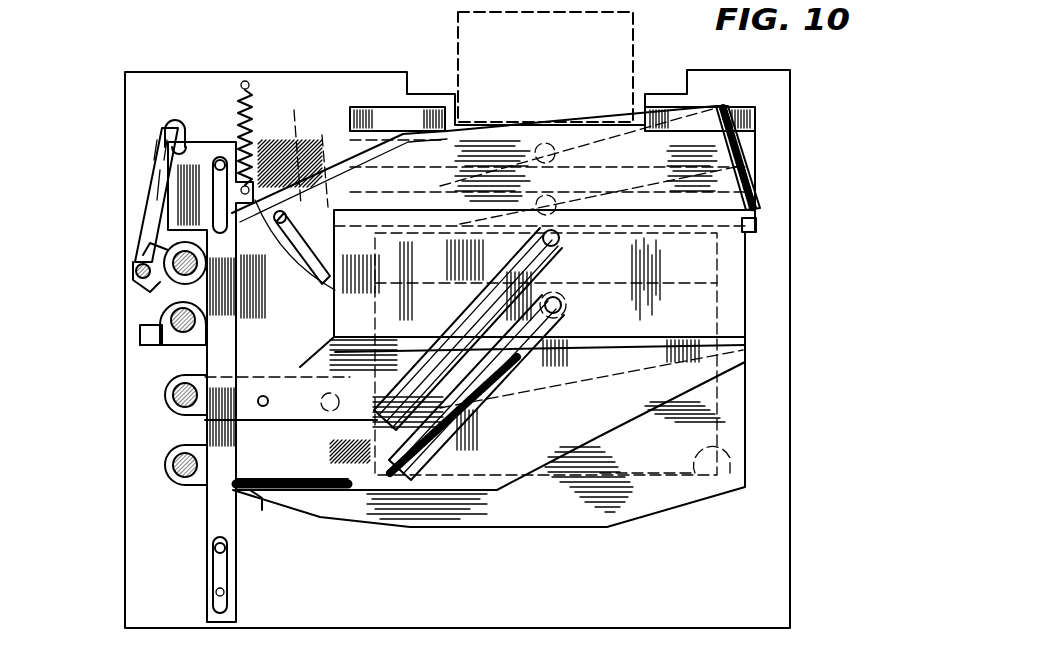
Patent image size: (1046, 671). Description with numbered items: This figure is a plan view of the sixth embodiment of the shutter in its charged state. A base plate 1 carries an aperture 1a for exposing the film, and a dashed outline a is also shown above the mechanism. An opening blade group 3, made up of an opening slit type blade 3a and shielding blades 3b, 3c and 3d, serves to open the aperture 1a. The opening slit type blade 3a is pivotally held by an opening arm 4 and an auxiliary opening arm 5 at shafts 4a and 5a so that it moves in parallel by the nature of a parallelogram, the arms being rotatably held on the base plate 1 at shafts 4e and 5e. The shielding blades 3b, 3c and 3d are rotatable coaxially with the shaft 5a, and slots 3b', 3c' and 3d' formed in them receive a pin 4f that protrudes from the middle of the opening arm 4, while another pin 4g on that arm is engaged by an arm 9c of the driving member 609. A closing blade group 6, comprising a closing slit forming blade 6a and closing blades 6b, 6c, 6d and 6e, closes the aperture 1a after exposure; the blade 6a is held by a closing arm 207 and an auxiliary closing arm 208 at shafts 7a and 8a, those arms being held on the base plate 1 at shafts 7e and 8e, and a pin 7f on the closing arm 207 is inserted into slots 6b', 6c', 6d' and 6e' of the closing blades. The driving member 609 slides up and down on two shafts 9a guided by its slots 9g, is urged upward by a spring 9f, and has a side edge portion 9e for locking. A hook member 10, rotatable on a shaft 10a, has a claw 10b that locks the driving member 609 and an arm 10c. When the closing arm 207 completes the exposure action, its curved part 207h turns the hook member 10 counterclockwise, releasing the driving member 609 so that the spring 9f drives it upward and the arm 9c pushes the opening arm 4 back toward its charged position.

The base plate 1 is at (760, 551).
The aperture 1a is at (745, 478).
The cassette position a is at (612, 28).
The opening blade group 3 is at (843, 287).
The opening slit type blade 3a is at (730, 300).
The shielding blade 3b is at (586, 377).
The shielding blade 3c is at (591, 426).
The shielding blade 3d is at (535, 379).
The slot 3b' is at (292, 529).
The slot 3c' is at (333, 526).
The slot 3d' is at (377, 527).
The opening arm 4 is at (172, 407).
The shaft 4a is at (562, 245).
The shaft 4e is at (177, 447).
The pin 4f is at (322, 393).
The pin 4g is at (263, 395).
The auxiliary opening arm 5 is at (205, 488).
The shaft 5a is at (566, 311).
The shaft 5e is at (173, 468).
The closing blade group 6 is at (843, 70).
The closing slit forming blade 6a is at (740, 115).
The closing blade 6b is at (533, 164).
The closing blade 6c is at (775, 158).
The closing blade 6d is at (584, 234).
The closing blade 6e is at (776, 218).
The slot 6b' is at (303, 141).
The slot 6c' is at (322, 155).
The slot 6d' is at (546, 178).
The slot 6e' is at (295, 232).
The shaft 7a is at (560, 202).
The shaft 7e is at (178, 382).
The pin 7f is at (280, 212).
The shaft 8a is at (557, 153).
The shaft 8e is at (172, 262).
The shaft 9a is at (219, 160).
The arm 9c is at (259, 500).
The side edge portion 9e is at (180, 143).
The spring 9f is at (248, 100).
The slot 9g is at (215, 180).
The hook member 10 is at (150, 185).
The shaft 10a is at (135, 273).
The claw 10b is at (165, 125).
The arm 10c is at (147, 290).
The closing arm 207 is at (180, 342).
The curved part 207h is at (140, 335).
The auxiliary closing arm 208 is at (190, 248).
The driving member 609 is at (213, 517).